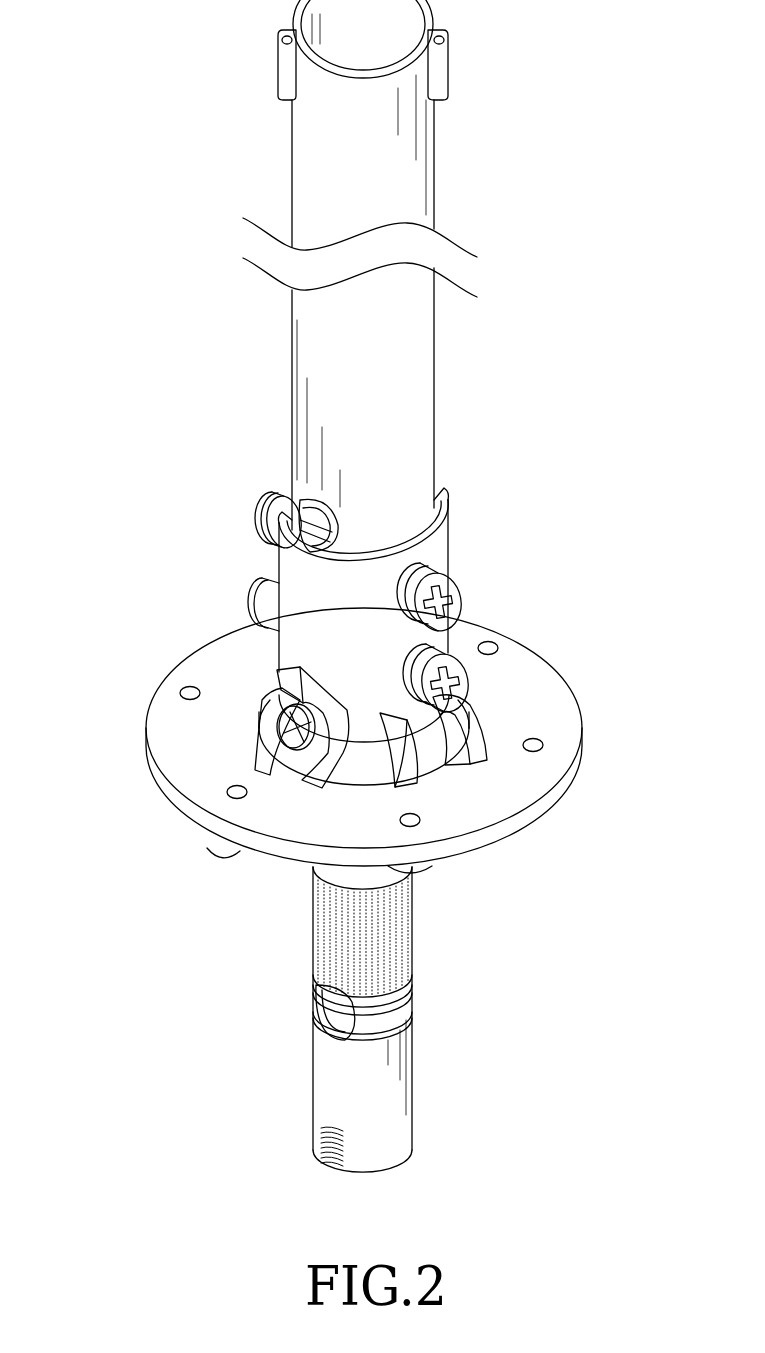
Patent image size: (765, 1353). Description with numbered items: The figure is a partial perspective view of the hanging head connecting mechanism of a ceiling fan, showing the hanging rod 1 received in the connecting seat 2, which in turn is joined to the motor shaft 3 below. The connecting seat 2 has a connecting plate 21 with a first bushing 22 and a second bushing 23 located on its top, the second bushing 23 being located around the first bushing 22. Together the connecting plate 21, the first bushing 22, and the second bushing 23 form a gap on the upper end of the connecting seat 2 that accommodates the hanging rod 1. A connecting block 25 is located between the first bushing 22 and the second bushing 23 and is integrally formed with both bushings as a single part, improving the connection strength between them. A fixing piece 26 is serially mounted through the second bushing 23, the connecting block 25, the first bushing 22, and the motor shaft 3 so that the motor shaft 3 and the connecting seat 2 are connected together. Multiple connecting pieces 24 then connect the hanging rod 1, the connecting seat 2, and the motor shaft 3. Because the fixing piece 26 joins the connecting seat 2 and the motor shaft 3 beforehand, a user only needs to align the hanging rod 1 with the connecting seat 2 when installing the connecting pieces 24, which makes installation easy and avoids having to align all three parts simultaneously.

The hanging rod 1 is at (320, 168).
The connecting seat 2 is at (76, 463).
The motor shaft 3 is at (393, 1086).
The connecting plate 21 is at (183, 733).
The first bushing 22 is at (292, 503).
The second bushing 23 is at (308, 585).
The connecting pieces 24 is at (433, 683).
The connecting block 25 is at (335, 521).
The fixing piece 26 is at (300, 697).